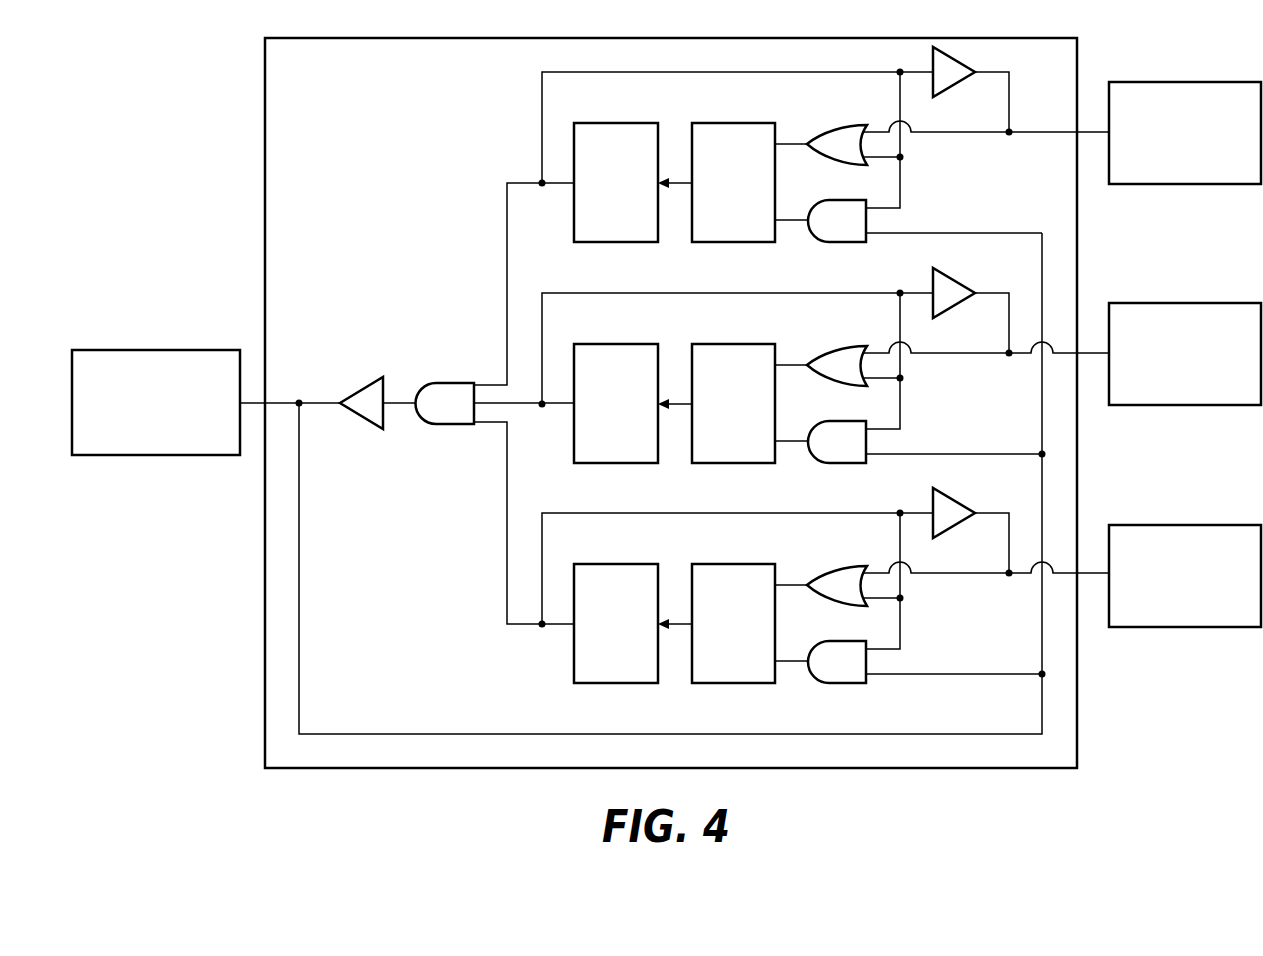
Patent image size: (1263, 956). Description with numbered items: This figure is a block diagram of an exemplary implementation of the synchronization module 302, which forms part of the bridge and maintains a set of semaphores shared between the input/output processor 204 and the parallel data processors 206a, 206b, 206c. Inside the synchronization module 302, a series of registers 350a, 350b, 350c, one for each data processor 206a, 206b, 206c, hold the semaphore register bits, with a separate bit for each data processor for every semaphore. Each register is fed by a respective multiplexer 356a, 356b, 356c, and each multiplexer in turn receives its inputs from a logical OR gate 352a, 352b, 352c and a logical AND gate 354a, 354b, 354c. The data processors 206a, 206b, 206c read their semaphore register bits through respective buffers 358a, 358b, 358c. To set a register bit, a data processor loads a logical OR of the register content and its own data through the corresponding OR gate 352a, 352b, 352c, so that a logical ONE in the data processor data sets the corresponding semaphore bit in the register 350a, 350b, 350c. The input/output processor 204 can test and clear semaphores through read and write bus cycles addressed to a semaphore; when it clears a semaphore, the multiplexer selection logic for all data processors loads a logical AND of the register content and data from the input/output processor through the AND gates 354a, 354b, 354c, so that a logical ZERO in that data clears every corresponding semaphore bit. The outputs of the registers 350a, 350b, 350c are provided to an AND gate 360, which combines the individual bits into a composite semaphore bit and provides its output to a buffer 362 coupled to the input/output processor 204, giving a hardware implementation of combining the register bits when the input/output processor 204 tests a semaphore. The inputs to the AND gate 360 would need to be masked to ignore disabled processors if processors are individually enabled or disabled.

The input/output processor 204 is at (158, 350).
The data processor 206a is at (1185, 82).
The data processor 206b is at (1185, 303).
The data processor 206c is at (1185, 525).
The synchronization module 302 is at (265, 112).
The register 350a is at (618, 123).
The register 350b is at (618, 344).
The register 350c is at (618, 564).
The logical OR gate 352a is at (845, 122).
The logical OR gate 352b is at (845, 343).
The logical OR gate 352c is at (845, 563).
The logical AND gate 354a is at (840, 244).
The logical AND gate 354b is at (840, 465).
The logical AND gate 354c is at (840, 685).
The multiplexer 356a is at (727, 123).
The multiplexer 356b is at (727, 344).
The multiplexer 356c is at (727, 564).
The buffer 358a is at (958, 62).
The buffer 358b is at (958, 283).
The buffer 358c is at (958, 503).
The AND gate 360 is at (447, 382).
The buffer 362 is at (362, 378).